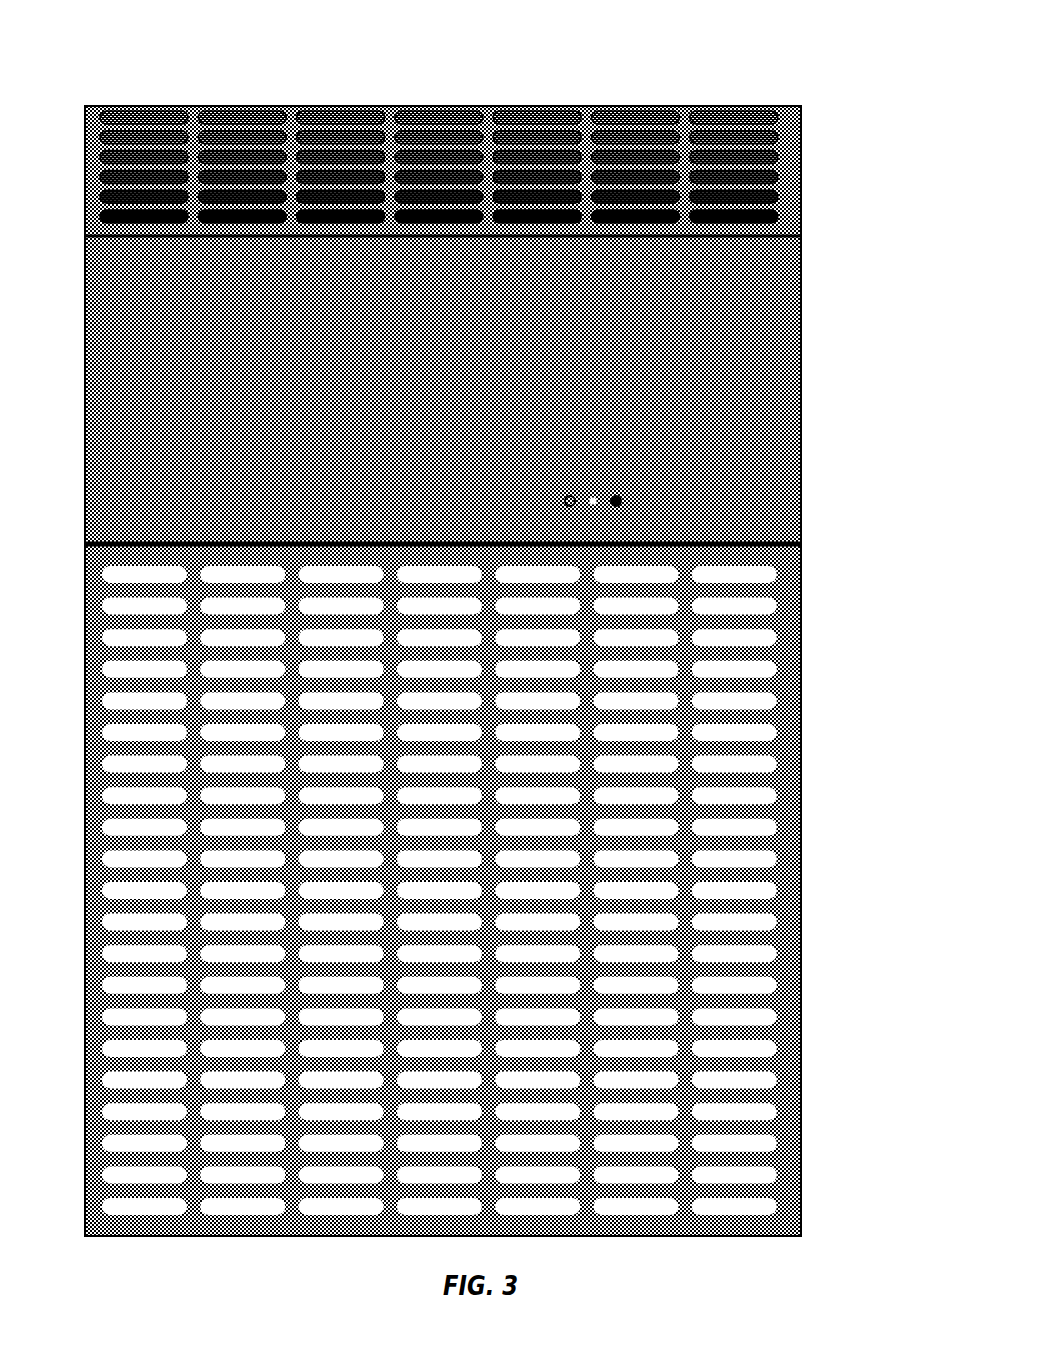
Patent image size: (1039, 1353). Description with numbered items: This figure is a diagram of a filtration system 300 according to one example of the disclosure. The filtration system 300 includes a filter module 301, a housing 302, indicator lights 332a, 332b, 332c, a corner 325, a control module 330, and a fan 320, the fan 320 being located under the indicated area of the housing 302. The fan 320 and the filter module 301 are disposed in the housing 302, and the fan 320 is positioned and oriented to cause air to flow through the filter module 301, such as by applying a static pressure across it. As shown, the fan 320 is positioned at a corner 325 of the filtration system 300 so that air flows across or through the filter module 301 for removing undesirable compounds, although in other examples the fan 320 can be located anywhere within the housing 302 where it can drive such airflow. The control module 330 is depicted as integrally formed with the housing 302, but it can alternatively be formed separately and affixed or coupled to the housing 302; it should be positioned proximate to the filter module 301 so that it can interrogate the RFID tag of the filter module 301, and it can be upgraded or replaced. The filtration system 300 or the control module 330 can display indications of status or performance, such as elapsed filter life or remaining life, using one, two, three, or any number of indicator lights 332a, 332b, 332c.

The filtration system 300 is at (91, 63).
The filter module 301 is at (646, 1013).
The housing 302 is at (799, 738).
The fan 320 is at (644, 129).
The corner 325 is at (810, 108).
The control module 330 is at (202, 376).
The indicator light 332a is at (580, 473).
The indicator light 332b is at (603, 474).
The indicator light 332c is at (633, 483).